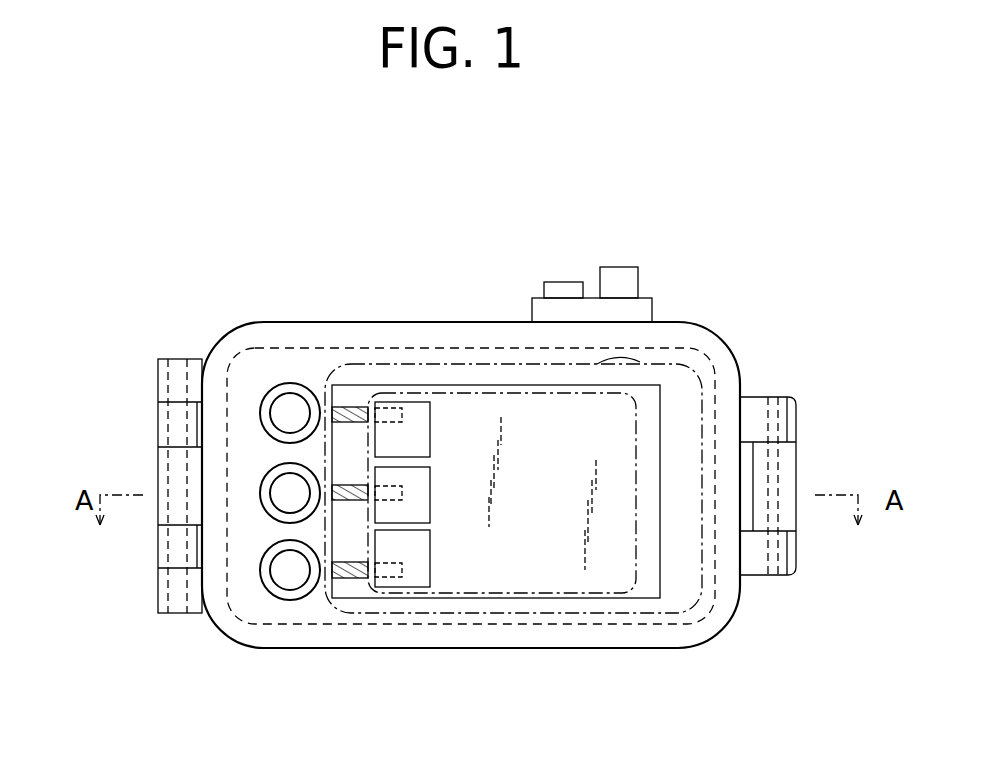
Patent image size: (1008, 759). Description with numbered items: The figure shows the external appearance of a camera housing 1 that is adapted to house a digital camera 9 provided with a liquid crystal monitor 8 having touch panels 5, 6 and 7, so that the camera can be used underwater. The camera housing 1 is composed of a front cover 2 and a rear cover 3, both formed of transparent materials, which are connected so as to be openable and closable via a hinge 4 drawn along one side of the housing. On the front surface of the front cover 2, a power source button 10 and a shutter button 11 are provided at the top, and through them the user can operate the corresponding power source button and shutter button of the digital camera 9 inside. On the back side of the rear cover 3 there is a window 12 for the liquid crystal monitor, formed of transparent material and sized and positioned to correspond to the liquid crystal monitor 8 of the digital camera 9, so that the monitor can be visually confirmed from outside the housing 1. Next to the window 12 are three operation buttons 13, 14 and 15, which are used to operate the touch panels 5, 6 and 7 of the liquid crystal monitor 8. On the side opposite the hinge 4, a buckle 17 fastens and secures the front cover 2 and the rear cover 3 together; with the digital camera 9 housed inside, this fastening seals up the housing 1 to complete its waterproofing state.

The camera housing 1 is at (135, 243).
The front cover 2 is at (158, 546).
The rear cover 3 is at (228, 630).
The hinge 4 is at (177, 358).
The touch panel 5 is at (417, 412).
The touch panel 6 is at (422, 488).
The touch panel 7 is at (420, 580).
The liquid crystal monitor 8 is at (558, 594).
The digital camera 9 is at (693, 598).
The power source button 10 is at (558, 287).
The shutter button 11 is at (630, 276).
The window for liquid crystal monitor 12 is at (333, 597).
The operation button 13 is at (300, 402).
The operation button 14 is at (292, 493).
The operation button 15 is at (280, 590).
The buckle 17 is at (790, 572).